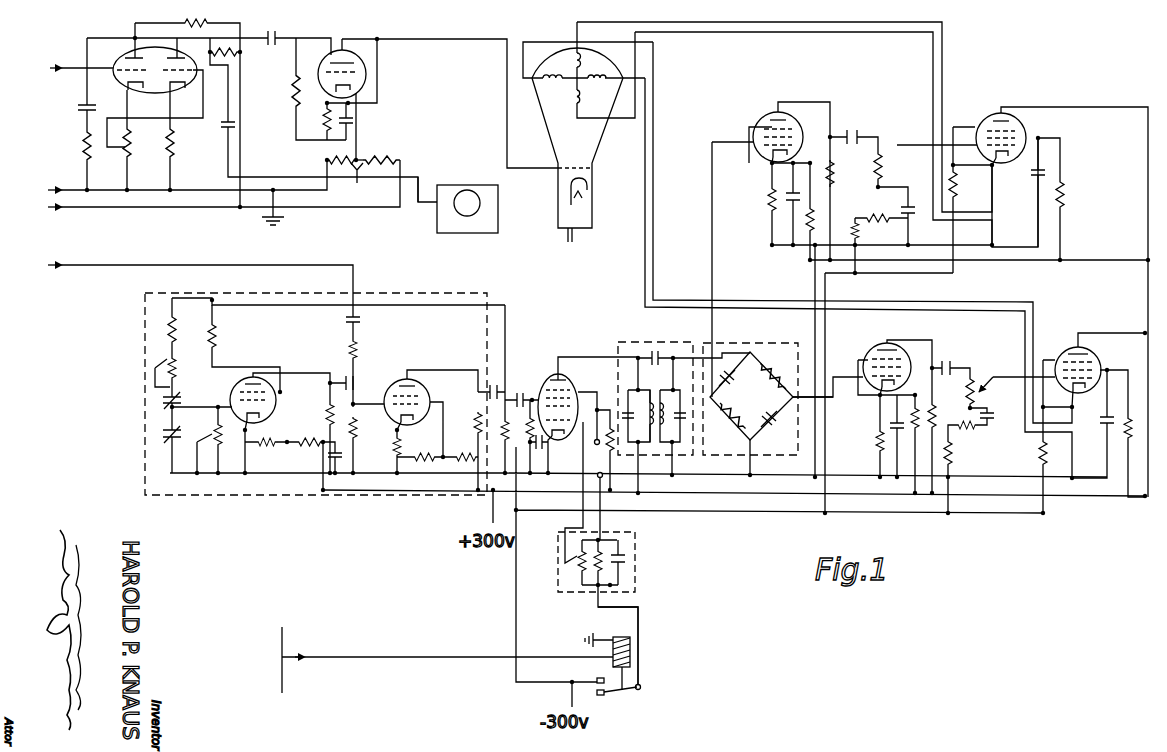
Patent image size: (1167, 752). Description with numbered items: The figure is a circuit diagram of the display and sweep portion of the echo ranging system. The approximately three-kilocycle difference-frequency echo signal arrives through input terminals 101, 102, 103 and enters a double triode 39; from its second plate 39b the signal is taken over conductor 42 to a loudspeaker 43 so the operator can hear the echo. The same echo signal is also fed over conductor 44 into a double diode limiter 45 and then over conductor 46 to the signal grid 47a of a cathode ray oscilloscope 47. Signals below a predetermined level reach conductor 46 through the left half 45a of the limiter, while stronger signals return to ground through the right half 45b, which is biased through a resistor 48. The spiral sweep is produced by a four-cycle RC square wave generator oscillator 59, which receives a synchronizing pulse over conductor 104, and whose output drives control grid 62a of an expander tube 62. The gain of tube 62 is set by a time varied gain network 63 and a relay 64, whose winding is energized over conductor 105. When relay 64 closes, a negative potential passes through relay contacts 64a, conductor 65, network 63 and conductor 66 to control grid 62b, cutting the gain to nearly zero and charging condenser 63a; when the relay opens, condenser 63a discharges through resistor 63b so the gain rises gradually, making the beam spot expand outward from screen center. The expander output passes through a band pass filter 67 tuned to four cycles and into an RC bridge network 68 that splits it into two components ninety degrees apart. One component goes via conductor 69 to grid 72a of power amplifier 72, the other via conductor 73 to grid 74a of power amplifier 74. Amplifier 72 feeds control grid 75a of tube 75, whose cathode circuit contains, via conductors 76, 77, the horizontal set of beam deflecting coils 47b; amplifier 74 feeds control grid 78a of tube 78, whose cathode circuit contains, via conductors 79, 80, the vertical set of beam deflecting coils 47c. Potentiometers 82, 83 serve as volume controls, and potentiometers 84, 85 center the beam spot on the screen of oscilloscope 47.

The double triode 39 is at (115, 57).
The second plate 39b is at (173, 53).
The conductor 42 is at (422, 207).
The loudspeaker 43 is at (460, 235).
The conductor 44 is at (290, 35).
The double diode limiter 45 is at (370, 72).
The left half of limiter 45a is at (322, 76).
The right half of limiter 45b is at (356, 75).
The conductor 46 is at (477, 39).
The cathode ray oscilloscope 47 is at (594, 197).
The signal grid 47a is at (568, 171).
The horizontal set of beam deflecting coils 47b is at (555, 86).
The vertical set of beam deflecting coils 47c is at (582, 101).
The resistor 48 is at (363, 179).
The RC square wave generator oscillator 59 is at (145, 337).
The expander tube 62 is at (580, 386).
The control grid 62a is at (547, 394).
The control grid 62b is at (562, 423).
The time varied gain network 63 is at (637, 578).
The condenser 63a is at (623, 551).
The resistor 63b is at (600, 568).
The relay 64 is at (632, 655).
The relay contacts 64a is at (607, 688).
The conductor 65 is at (640, 619).
The conductor 66 is at (565, 549).
The band pass filter 67 is at (636, 342).
The RC bridge network 68 is at (750, 343).
The conductor 69 is at (833, 401).
The power amplifier 72 is at (902, 347).
The grid 72a is at (878, 373).
The conductor 73 is at (710, 222).
The power amplifier 74 is at (799, 116).
The grid 74a is at (770, 143).
The tube 75 is at (1103, 362).
The control grid 75a is at (1070, 377).
The conductor 76 is at (733, 300).
The conductor 77 is at (750, 309).
The tube 78 is at (1027, 129).
The control grid 78a is at (992, 145).
The conductor 79 is at (815, 25).
The conductor 80 is at (838, 34).
The potentiometer 82 is at (985, 372).
The potentiometer 83 is at (887, 166).
The potentiometer 84 is at (963, 431).
The potentiometer 85 is at (873, 212).
The input terminal 101 is at (57, 69).
The input terminal 102 is at (57, 188).
The input terminal 103 is at (100, 208).
The conductor 104 is at (84, 263).
The conductor 105 is at (328, 656).